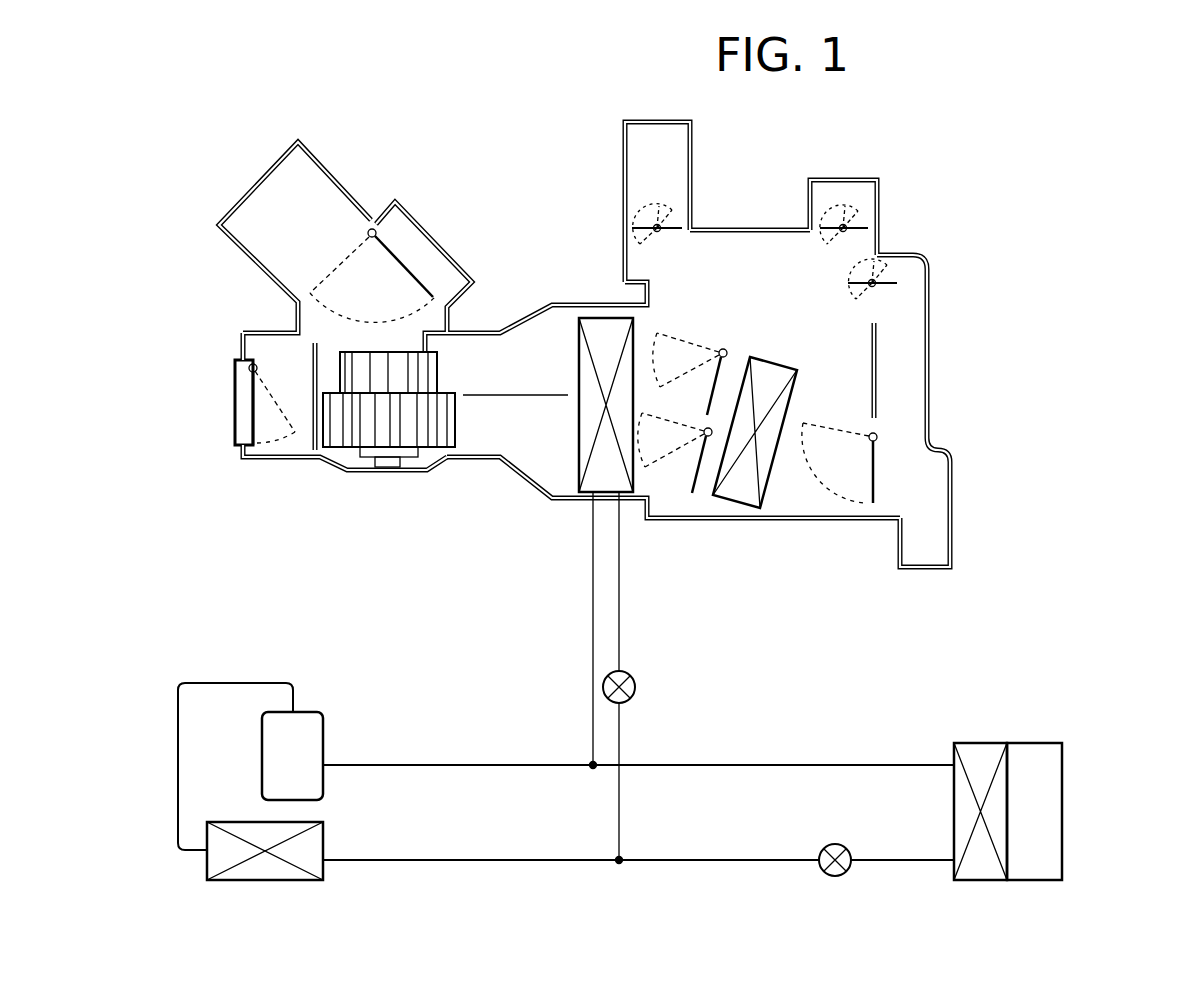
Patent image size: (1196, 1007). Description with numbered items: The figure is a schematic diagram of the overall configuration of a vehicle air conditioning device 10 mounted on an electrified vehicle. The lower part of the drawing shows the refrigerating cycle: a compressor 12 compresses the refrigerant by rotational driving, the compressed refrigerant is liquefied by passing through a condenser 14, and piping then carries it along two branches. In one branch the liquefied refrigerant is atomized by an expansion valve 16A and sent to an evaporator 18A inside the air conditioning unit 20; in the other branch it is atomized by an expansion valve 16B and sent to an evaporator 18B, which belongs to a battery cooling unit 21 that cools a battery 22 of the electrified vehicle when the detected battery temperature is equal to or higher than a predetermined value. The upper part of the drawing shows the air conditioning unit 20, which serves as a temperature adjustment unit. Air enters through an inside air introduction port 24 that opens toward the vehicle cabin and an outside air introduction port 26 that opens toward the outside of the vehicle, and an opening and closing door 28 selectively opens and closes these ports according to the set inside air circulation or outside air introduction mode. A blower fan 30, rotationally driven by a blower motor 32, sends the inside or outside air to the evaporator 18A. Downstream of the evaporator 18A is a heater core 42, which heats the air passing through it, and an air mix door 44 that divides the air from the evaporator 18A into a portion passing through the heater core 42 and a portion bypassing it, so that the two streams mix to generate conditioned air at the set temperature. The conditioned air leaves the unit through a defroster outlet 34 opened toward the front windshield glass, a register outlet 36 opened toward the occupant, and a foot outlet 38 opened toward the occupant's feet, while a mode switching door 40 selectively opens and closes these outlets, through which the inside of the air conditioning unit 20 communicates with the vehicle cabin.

The vehicle air conditioning device 10 is at (1008, 192).
The compressor 12 is at (325, 722).
The condenser 14 is at (305, 822).
The expansion valve 16A is at (637, 687).
The expansion valve 16B is at (836, 877).
The evaporator 18A is at (577, 470).
The evaporator 18B is at (983, 740).
The air conditioning unit 20 is at (340, 565).
The battery cooling unit 21 is at (1087, 668).
The battery 22 is at (1030, 882).
The inside air introduction port 24 is at (425, 228).
The outside air introduction port 26 is at (256, 184).
The opening and closing door 28 is at (410, 262).
The blower fan 30 is at (440, 362).
The blower motor 32 is at (370, 452).
The defroster outlet 34 is at (683, 138).
The register outlet 36 is at (850, 185).
The foot outlet 38 is at (925, 570).
The mode switching door 40 is at (668, 232).
The heater core 42 is at (770, 480).
The air mix door 44 is at (730, 370).